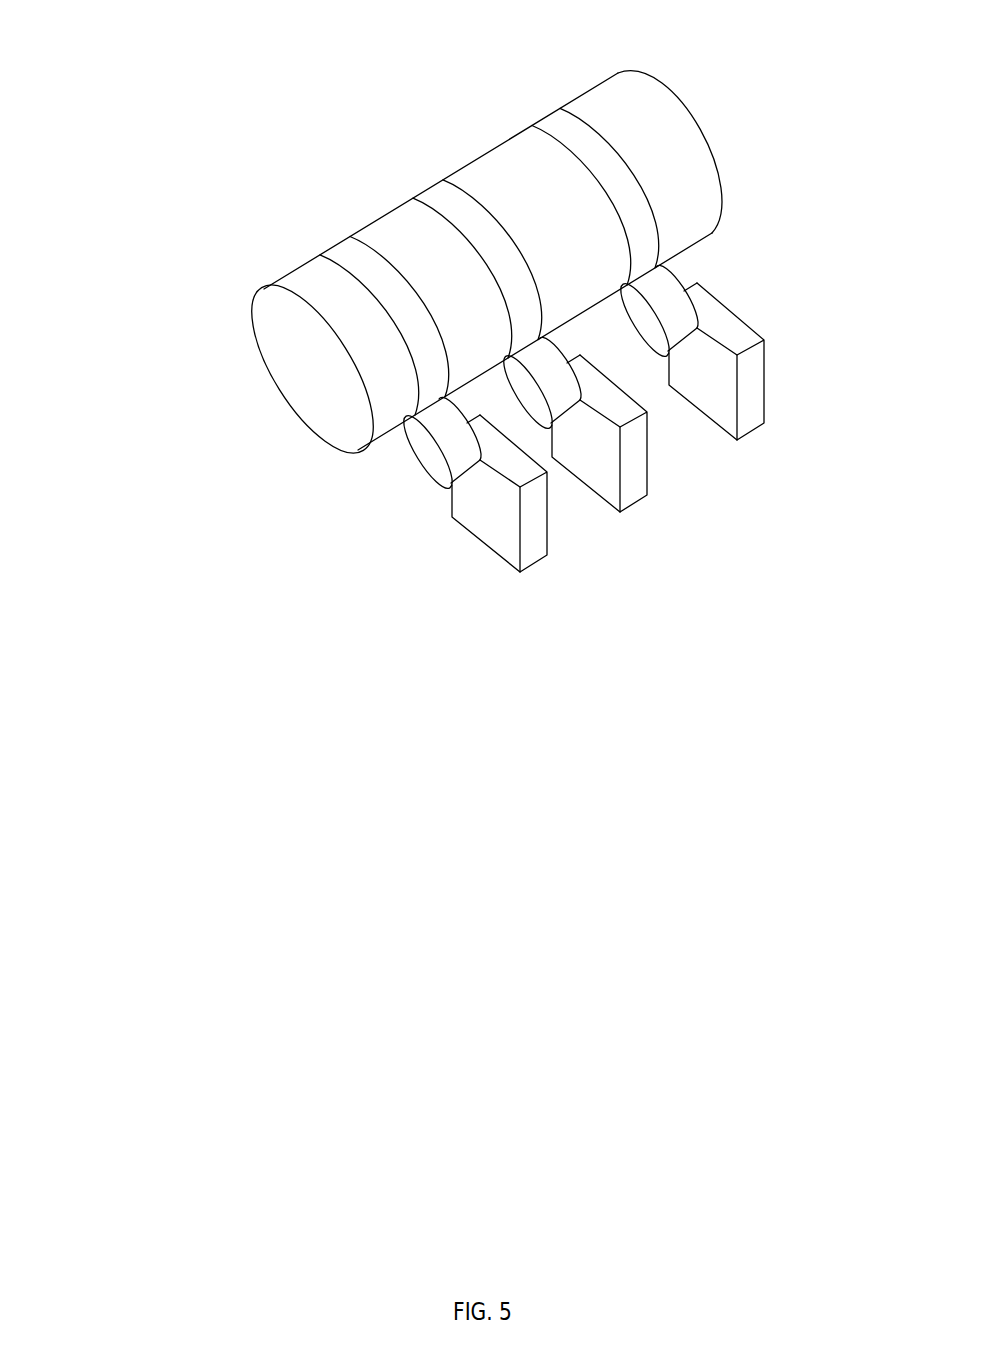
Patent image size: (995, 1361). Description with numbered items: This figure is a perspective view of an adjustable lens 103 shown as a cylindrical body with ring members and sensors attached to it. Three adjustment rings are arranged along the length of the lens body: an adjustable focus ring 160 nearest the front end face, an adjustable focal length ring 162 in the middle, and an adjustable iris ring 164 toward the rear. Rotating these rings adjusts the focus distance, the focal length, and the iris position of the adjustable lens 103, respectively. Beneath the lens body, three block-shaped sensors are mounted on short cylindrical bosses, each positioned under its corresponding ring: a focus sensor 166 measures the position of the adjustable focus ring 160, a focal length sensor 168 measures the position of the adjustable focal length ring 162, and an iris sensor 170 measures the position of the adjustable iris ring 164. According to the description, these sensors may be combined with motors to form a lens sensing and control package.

The adjustable lens 103 is at (265, 370).
The adjustable focus ring 160 is at (325, 250).
The adjustable focal length ring 162 is at (427, 187).
The adjustable iris ring 164 is at (543, 118).
The focus sensor 166 is at (533, 565).
The focal length sensor 168 is at (640, 502).
The iris sensor 170 is at (755, 433).